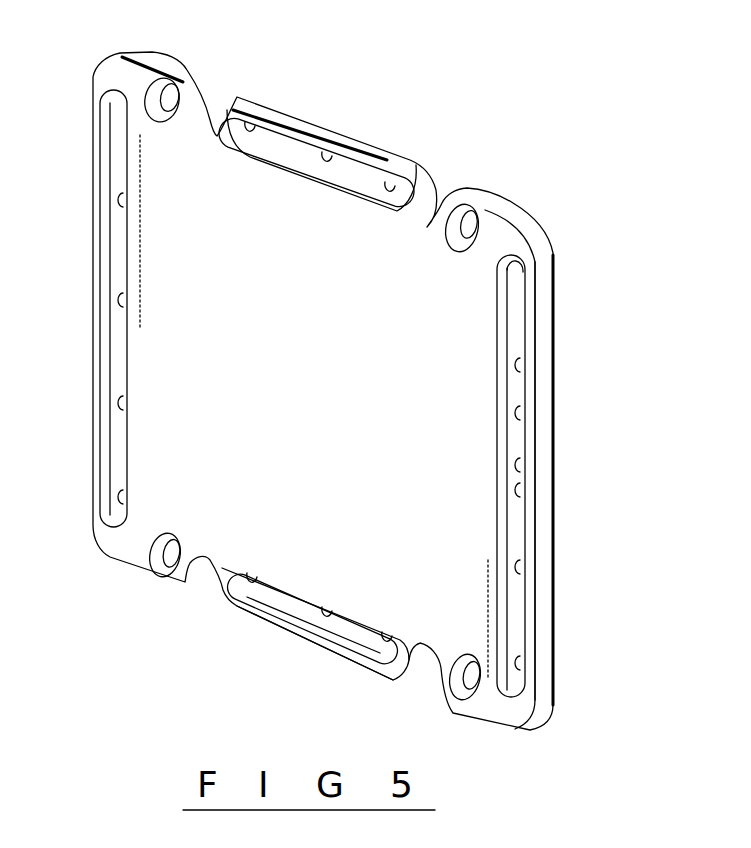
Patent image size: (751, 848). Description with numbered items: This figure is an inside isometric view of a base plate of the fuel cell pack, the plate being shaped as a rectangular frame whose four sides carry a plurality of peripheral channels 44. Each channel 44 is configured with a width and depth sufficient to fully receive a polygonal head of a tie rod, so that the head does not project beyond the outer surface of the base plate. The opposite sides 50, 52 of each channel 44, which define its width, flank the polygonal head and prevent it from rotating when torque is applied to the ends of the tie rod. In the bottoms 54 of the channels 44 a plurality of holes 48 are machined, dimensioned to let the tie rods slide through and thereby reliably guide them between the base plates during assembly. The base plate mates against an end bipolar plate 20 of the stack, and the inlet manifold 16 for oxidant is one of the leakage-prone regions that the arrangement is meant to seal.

The bipolar plate 20 is at (610, 437).
The peripheral channel 44 is at (362, 178).
The channel side 52 is at (543, 357).
The inlet manifold 16 is at (523, 503).
The channel side 50 is at (498, 503).
The channel bottom 54 is at (301, 594).
The hole 48 is at (343, 647).